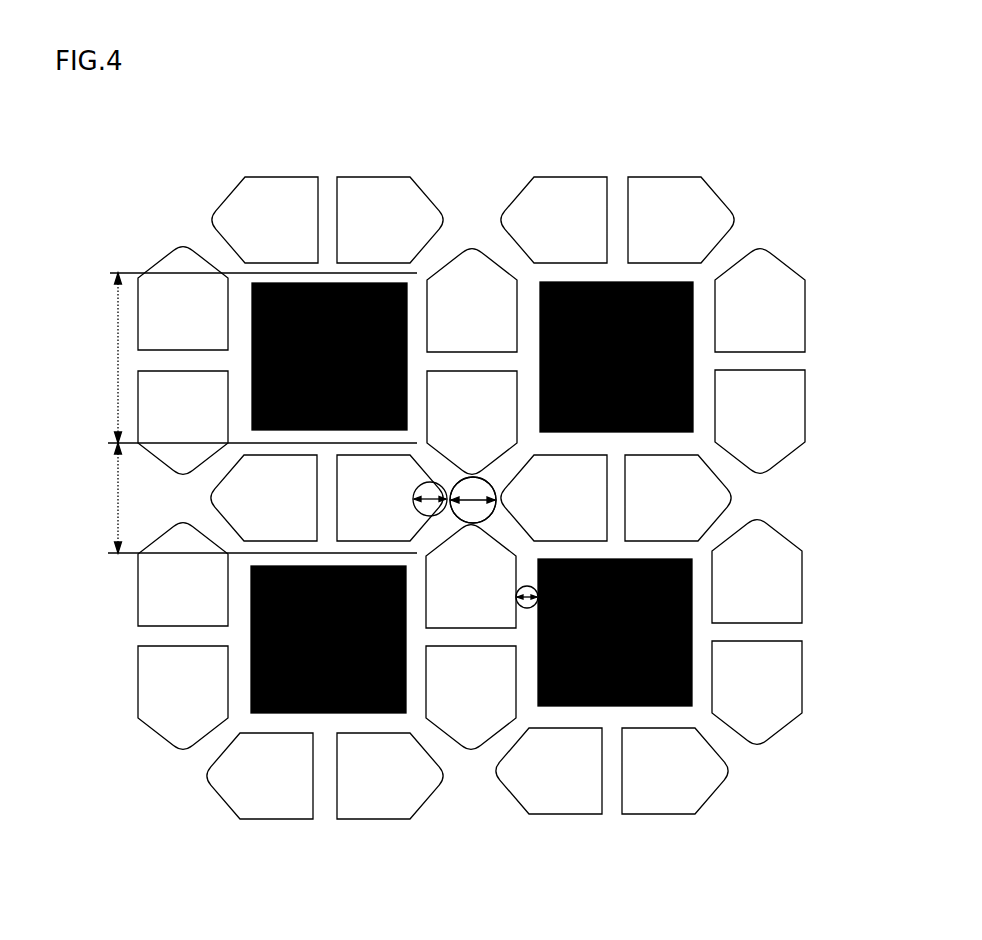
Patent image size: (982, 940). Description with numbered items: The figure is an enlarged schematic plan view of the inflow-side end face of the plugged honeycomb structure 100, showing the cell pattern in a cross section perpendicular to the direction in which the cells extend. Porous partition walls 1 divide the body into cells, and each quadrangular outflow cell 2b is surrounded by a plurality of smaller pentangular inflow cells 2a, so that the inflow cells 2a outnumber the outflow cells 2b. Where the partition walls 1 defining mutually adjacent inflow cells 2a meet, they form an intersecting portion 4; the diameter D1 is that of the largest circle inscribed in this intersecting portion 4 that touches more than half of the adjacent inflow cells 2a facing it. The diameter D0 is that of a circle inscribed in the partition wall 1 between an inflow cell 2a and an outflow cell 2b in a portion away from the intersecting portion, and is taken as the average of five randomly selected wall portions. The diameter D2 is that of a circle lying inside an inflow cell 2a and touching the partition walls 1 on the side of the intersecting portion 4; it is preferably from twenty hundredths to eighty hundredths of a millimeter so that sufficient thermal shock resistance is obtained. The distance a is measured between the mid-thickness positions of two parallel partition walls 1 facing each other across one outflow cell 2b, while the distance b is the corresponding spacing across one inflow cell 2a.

The plugged honeycomb structure 100 is at (821, 107).
The partition wall 1 is at (702, 317).
The inflow cell 2a is at (755, 572).
The outflow cell 2b is at (693, 377).
The intersecting portion 4 is at (474, 488).
The diameter of circle inscribed in partition wall D0 is at (526, 605).
The diameter of circle inscribed in intersecting portion D1 is at (472, 502).
The diameter of circle inscribed in inflow cell D2 is at (330, 713).
The distance a is at (254, 358).
The distance b is at (255, 498).